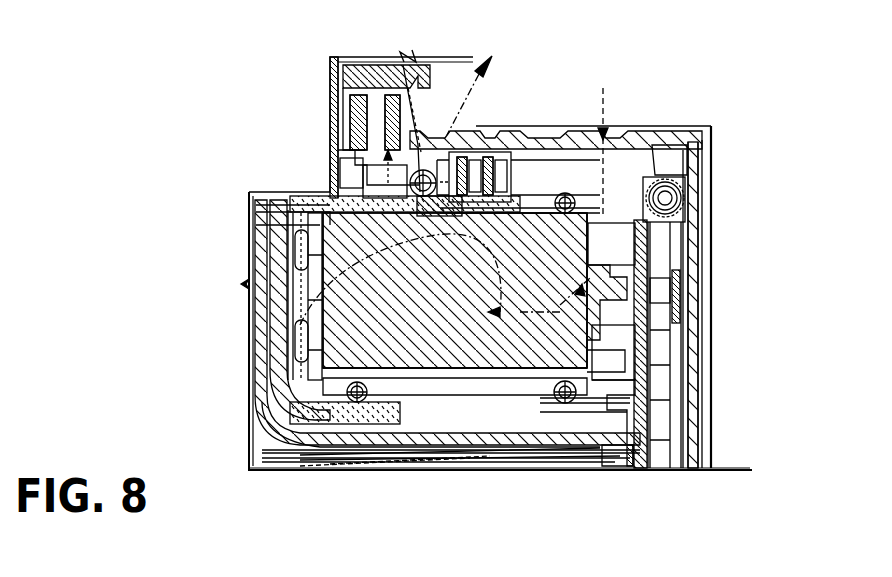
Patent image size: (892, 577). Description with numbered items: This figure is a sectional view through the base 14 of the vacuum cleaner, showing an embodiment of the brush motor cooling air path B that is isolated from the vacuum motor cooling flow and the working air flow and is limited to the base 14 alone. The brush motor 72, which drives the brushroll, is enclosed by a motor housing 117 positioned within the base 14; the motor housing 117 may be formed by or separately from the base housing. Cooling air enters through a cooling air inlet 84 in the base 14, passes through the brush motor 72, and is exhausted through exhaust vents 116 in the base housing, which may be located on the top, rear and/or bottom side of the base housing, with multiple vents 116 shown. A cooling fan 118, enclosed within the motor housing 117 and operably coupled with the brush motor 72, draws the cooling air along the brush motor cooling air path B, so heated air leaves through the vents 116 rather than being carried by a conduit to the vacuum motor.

The base 14 is at (753, 312).
The brush motor 72 is at (502, 360).
The cooling air inlet 84 is at (607, 150).
The exhaust vents 116 is at (392, 118).
The motor housing 117 is at (475, 455).
The cooling fan 118 is at (613, 352).
The brush motor cooling air path B is at (607, 88).